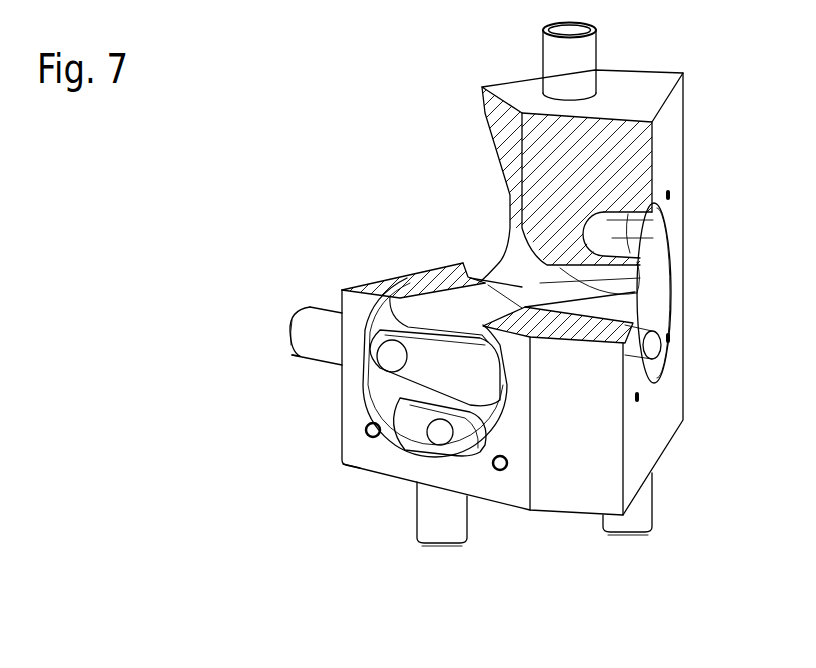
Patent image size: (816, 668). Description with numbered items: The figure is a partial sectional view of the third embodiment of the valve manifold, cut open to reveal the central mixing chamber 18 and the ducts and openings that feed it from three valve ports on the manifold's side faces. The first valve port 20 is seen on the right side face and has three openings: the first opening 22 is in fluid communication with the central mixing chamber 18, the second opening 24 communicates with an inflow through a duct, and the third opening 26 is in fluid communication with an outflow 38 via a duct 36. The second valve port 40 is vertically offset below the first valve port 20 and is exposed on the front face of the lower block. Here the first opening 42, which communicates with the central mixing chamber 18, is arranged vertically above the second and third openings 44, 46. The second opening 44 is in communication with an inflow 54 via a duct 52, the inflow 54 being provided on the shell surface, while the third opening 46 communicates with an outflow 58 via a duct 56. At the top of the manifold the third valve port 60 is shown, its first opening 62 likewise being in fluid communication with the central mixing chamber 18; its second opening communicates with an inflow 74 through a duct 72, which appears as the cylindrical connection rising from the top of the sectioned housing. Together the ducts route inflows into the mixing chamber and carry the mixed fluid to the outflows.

The central mixing chamber 18 is at (522, 287).
The first valve port 20 is at (666, 370).
The first opening 22 is at (653, 273).
The second opening 24 is at (653, 223).
The third opening 26 is at (653, 343).
The duct 36 is at (638, 503).
The outflow 38 is at (630, 533).
The second valve port 40 is at (475, 470).
The first opening 42 is at (410, 305).
The second opening 44 is at (420, 360).
The third opening 46 is at (420, 423).
The duct 52 is at (310, 343).
The inflow 54 is at (290, 333).
The duct 56 is at (433, 502).
The outflow 58 is at (433, 545).
The third valve port 60 is at (469, 112).
The first opening 62 is at (493, 223).
The duct 72 is at (580, 55).
The inflow 74 is at (573, 28).